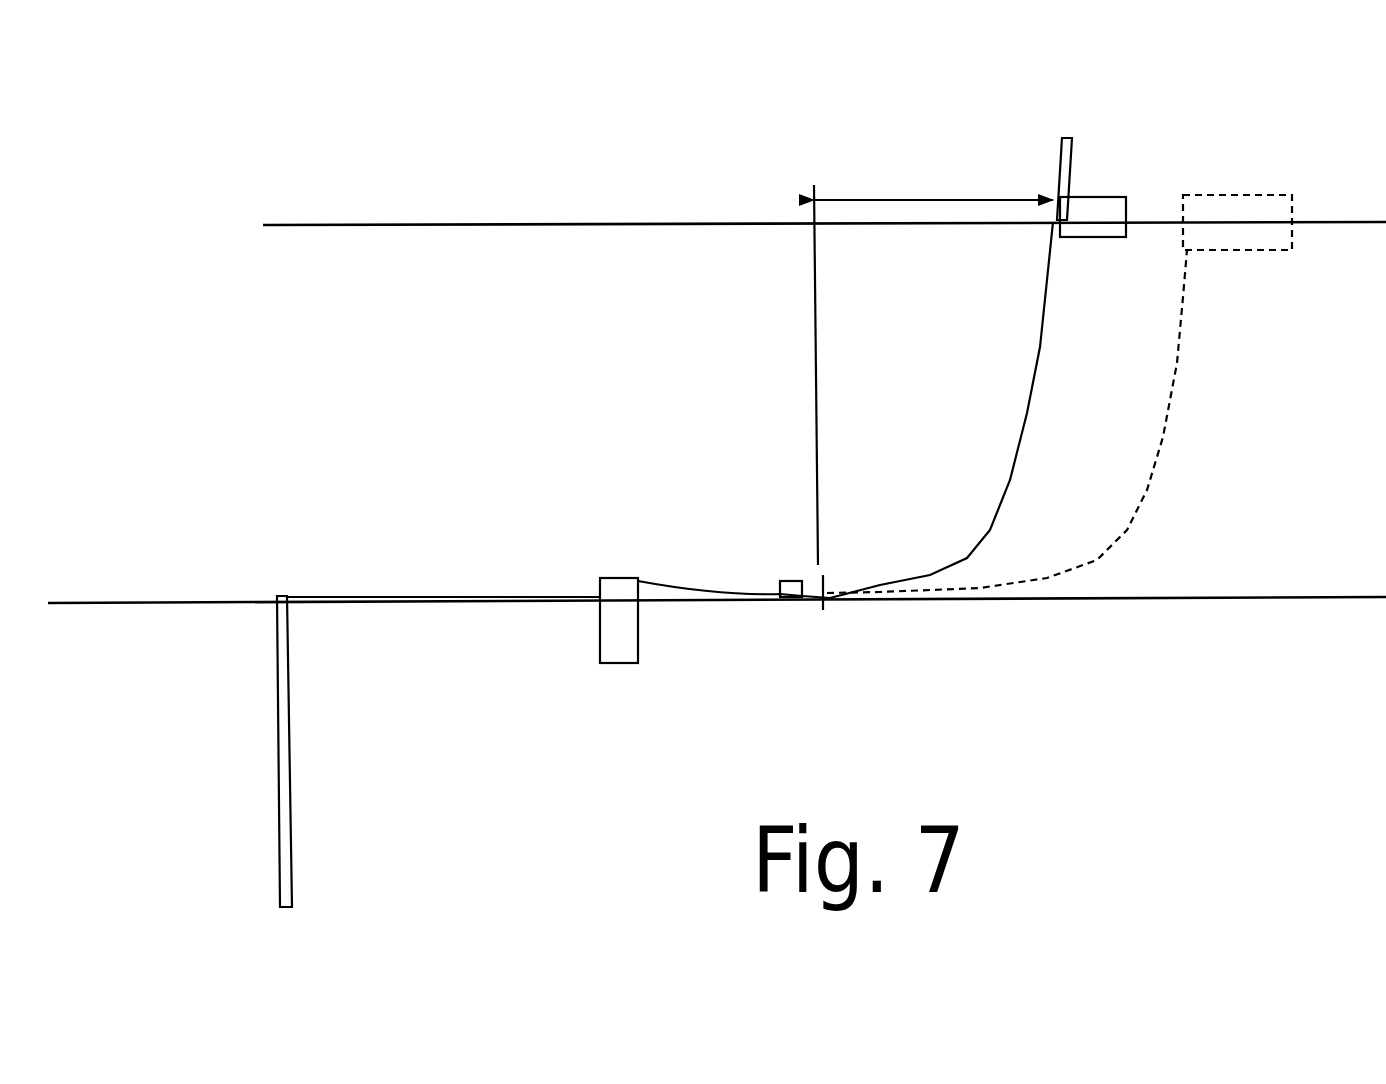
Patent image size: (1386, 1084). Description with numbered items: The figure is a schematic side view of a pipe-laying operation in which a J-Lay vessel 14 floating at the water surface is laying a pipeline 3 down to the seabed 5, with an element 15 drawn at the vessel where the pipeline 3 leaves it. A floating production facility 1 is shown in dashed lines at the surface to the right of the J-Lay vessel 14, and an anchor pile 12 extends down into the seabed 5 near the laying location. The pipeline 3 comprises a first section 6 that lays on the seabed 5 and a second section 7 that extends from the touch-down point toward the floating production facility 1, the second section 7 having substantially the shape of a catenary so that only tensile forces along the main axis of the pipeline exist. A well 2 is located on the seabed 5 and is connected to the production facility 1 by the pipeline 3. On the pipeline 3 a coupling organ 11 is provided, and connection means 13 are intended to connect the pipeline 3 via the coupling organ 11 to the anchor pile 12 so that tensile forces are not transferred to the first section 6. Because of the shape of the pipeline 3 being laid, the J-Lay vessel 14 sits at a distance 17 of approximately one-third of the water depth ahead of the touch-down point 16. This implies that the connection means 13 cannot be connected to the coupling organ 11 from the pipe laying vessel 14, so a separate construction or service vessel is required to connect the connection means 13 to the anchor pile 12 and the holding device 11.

The production facility 1 is at (1268, 195).
The well 2 is at (278, 708).
The pipeline 3 is at (972, 555).
The seabed 5 is at (175, 603).
The first section 6 is at (403, 597).
The second section 7 is at (1167, 430).
The coupling organ 11 is at (793, 580).
The anchor pile 12 is at (618, 578).
The connection means 13 is at (705, 583).
The J-Lay vessel 14 is at (1112, 195).
The stinger 15 is at (1057, 143).
The touch-down point 16 is at (830, 608).
The distance 17 is at (880, 193).